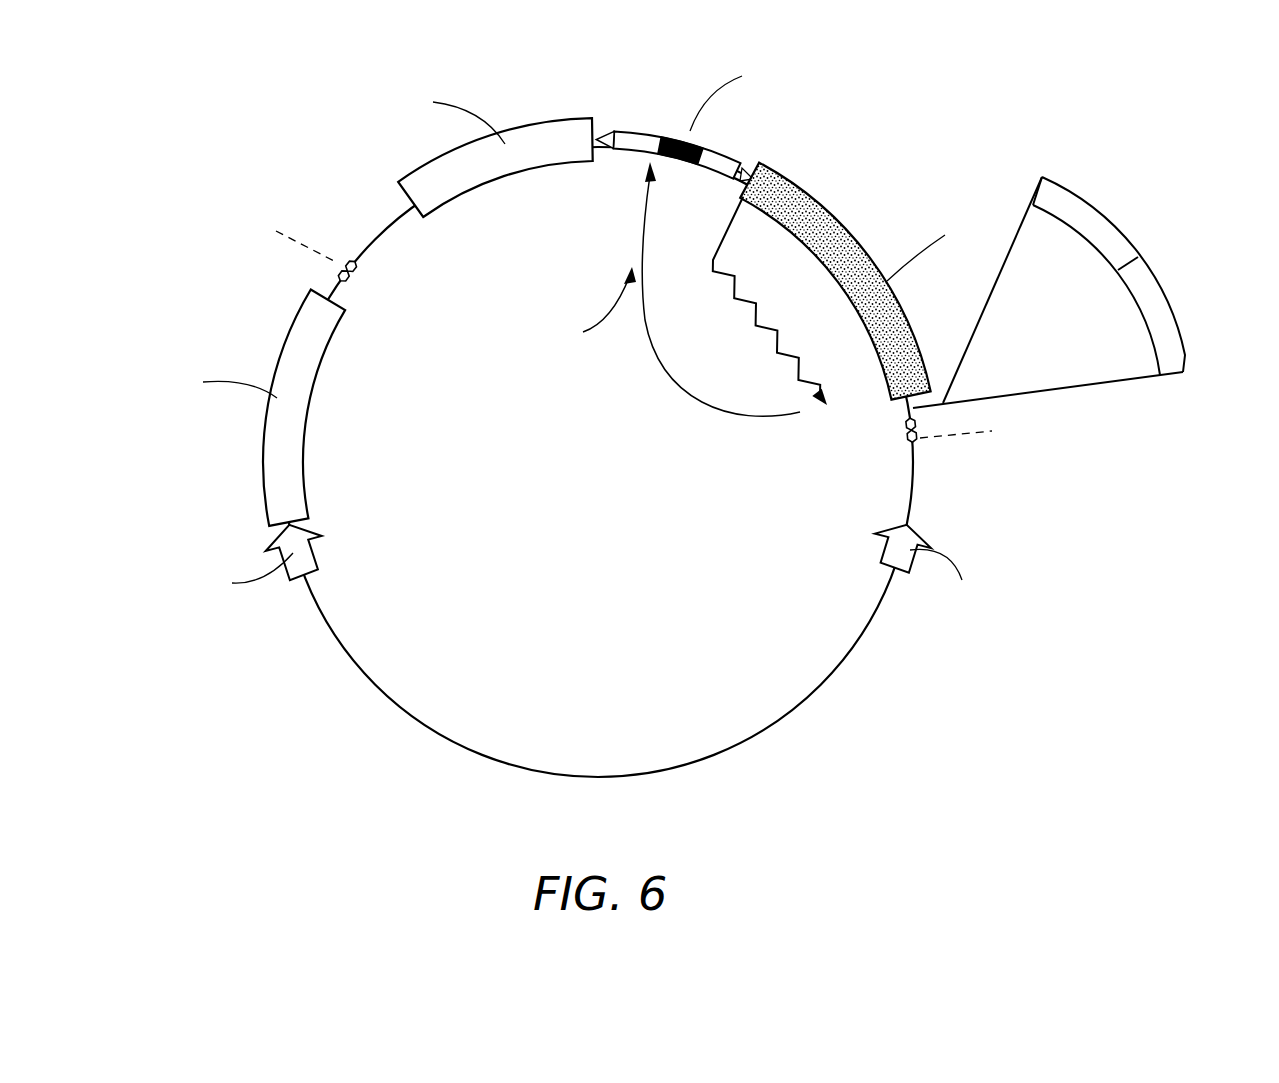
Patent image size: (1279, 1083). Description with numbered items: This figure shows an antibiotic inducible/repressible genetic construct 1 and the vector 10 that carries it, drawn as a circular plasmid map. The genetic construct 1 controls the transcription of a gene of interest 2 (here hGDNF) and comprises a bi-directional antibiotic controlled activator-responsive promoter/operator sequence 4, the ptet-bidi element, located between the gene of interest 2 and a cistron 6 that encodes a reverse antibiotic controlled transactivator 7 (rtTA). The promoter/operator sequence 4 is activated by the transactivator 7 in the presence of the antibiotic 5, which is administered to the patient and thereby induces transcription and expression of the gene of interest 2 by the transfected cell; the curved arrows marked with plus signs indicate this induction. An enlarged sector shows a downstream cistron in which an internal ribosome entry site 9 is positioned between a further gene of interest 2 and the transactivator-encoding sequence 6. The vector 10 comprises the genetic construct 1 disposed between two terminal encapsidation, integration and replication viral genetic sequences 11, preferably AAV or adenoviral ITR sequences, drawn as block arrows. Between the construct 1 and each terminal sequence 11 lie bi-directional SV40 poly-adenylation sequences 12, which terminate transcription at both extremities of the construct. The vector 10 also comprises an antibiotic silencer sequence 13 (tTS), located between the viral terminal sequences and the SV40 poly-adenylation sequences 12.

The genetic construct 1 is at (786, 131).
The gene of interest 2 is at (480, 185).
The bi-directional antibiotic controlled activator-responsive promoter/operator sequ 4 is at (673, 160).
The antibiotic 5 is at (669, 289).
The reverse antibiotic controlled transactivator nucleotide sequence 6 is at (830, 267).
The reverse antibiotic controlled transactivator 7 is at (797, 342).
The internal ribosome entry site (IRES) 9 is at (1097, 200).
The vector 10 is at (255, 697).
The terminal encapsidation, integration and replication viral genetic sequences 11 is at (330, 543).
The SV40 bi-directional poly-adenylation sequences 12 is at (352, 274).
The antibiotic silencer sequence 13 is at (305, 430).